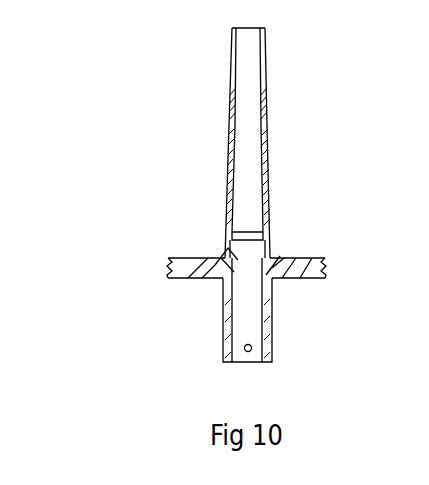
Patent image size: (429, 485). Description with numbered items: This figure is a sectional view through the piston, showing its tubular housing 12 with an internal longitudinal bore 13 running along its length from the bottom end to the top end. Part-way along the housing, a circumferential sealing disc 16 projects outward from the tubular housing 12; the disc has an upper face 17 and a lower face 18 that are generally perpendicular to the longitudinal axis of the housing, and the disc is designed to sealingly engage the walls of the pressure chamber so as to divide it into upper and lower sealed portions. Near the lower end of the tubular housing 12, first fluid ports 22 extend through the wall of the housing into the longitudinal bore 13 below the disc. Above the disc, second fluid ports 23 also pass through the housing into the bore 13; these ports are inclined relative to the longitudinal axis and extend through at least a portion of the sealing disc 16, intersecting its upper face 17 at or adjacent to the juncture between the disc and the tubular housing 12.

The tubular housing 12 is at (263, 192).
The internal longitudinal bore 13 is at (247, 83).
The circumferential sealing disc 16 is at (192, 268).
The upper face 17 is at (312, 258).
The lower face 18 is at (305, 283).
The first fluid ports 22 is at (228, 348).
The second fluid ports 23 is at (277, 257).